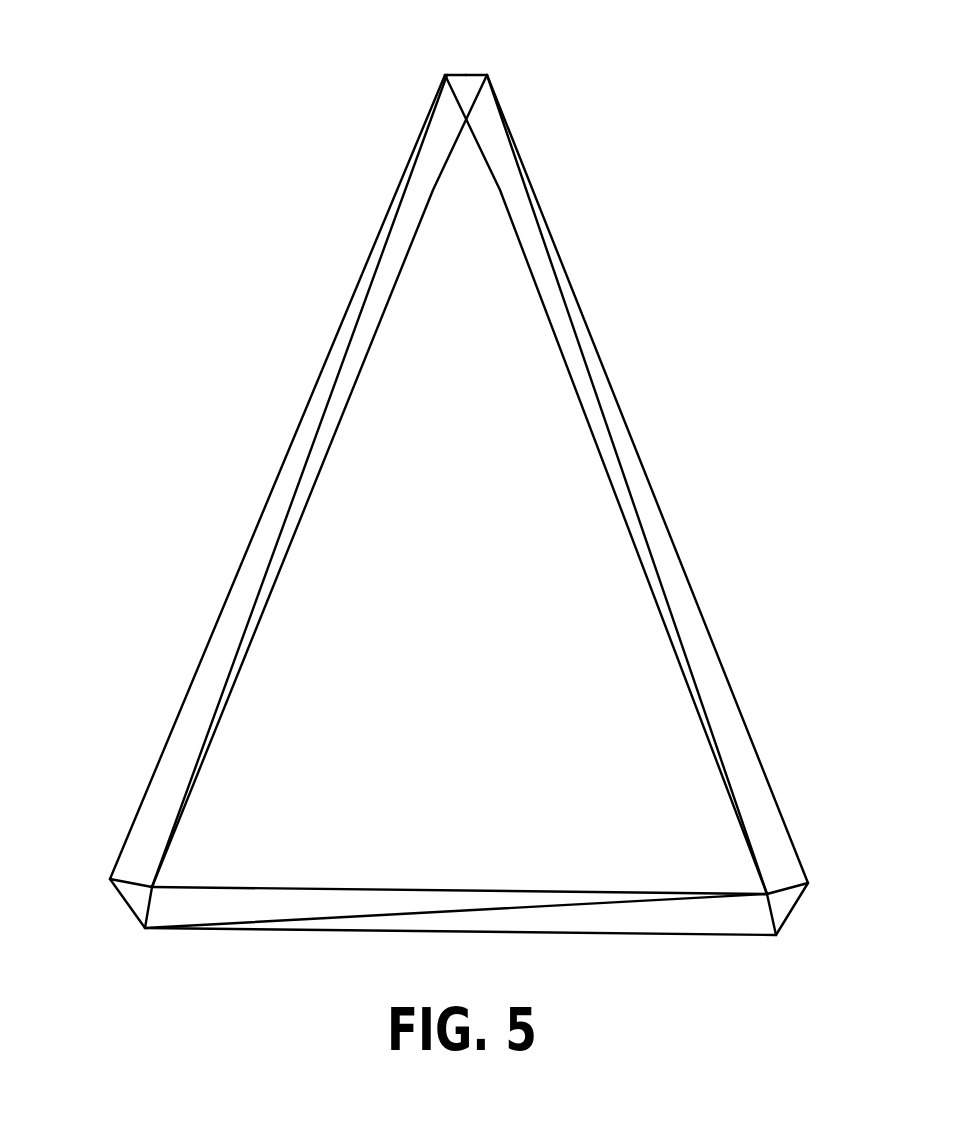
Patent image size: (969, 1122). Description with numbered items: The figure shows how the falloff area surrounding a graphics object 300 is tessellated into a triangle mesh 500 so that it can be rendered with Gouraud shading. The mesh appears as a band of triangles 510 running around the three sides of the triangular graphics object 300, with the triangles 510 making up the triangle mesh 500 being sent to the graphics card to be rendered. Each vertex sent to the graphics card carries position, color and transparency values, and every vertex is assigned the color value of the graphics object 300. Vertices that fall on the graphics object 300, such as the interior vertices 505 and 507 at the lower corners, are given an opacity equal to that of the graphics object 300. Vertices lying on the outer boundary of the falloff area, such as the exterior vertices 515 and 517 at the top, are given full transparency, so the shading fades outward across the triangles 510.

The triangle mesh 500 is at (593, 340).
The interior vertex 505 is at (155, 882).
The interior vertex 507 is at (765, 888).
The triangles 510 is at (463, 85).
The exterior vertex 515 is at (487, 73).
The exterior vertex 517 is at (445, 75).
The graphics object 300 is at (459, 484).